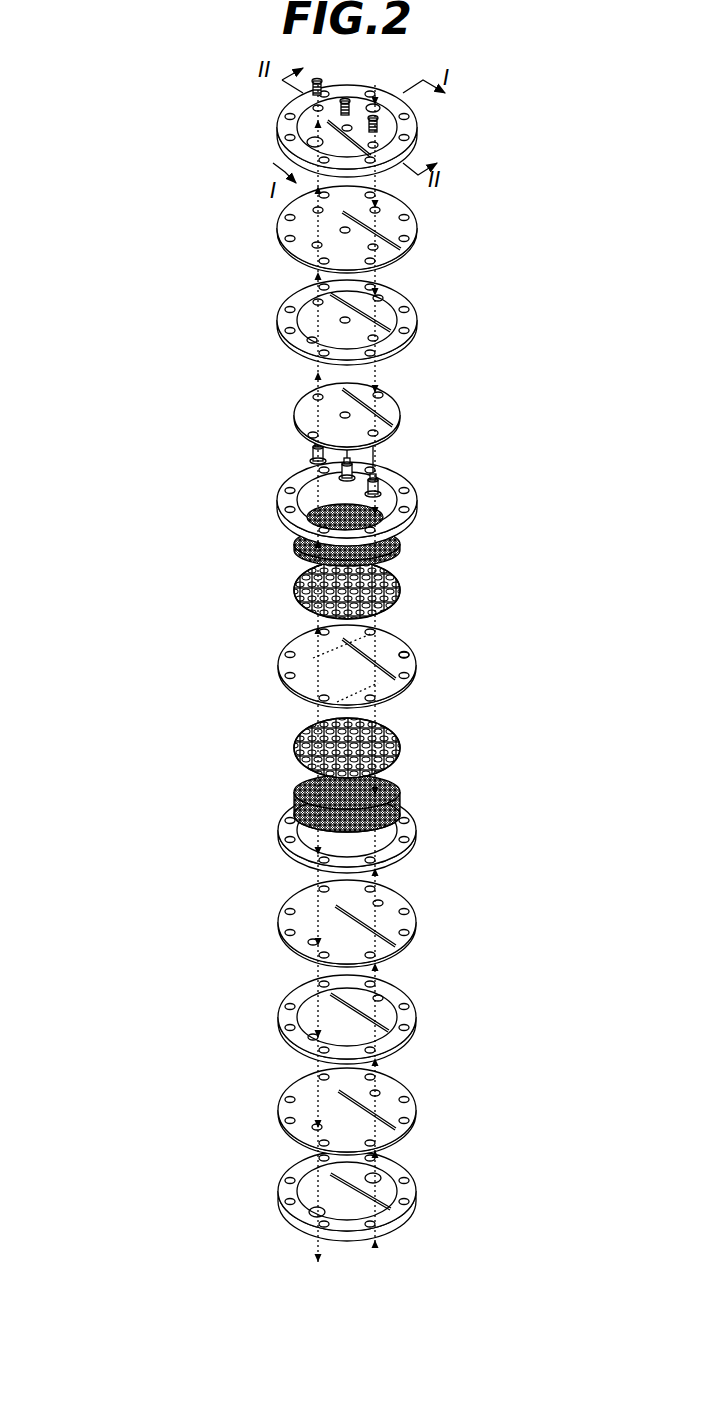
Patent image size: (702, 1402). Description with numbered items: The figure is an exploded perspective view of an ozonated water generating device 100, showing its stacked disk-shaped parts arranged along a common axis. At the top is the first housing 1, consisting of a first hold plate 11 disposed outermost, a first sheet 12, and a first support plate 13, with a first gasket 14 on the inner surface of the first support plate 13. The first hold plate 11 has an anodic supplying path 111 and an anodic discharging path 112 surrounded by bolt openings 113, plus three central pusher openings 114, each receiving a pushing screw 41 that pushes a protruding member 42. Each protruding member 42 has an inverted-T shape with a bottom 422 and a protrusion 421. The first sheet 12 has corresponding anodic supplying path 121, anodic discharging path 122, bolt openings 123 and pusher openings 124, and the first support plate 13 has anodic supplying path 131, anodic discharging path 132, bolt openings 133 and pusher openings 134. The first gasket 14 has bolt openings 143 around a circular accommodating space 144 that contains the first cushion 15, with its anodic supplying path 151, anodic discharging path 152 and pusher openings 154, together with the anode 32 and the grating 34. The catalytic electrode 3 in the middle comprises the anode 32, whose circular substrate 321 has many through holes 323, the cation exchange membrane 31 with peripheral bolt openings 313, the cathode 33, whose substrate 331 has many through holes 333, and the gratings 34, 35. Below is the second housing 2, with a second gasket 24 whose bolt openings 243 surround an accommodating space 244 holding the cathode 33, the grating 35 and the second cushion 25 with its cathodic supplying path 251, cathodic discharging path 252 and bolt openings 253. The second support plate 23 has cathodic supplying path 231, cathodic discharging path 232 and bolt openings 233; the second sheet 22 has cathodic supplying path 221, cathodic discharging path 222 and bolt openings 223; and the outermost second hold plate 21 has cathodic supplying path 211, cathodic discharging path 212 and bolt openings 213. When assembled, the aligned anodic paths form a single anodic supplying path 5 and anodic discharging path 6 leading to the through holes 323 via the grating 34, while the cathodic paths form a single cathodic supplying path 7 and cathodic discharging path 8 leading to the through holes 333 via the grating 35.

The ozonated water generating device 100 is at (105, 133).
The first housing 1 is at (182, 88).
The second housing 2 is at (182, 970).
The catalytic electrode 3 is at (182, 515).
The first hold plate 11 is at (268, 138).
The first sheet 12 is at (268, 212).
The first support plate 13 is at (268, 318).
The first gasket 14 is at (275, 497).
The first cushion 15 is at (275, 405).
The pushing screw 41 is at (370, 120).
The protruding member 42 is at (148, 418).
The protrusion 421 is at (310, 450).
The bottom 422 is at (308, 462).
The anodic supplying path 111 is at (454, 130).
The anodic discharging path 112 is at (431, 158).
The bolt openings 113 is at (410, 113).
The pusher openings 114 is at (312, 106).
The anodic supplying path 121 is at (383, 217).
The anodic discharging path 122 is at (322, 246).
The bolt openings 123 is at (403, 212).
The pusher openings 124 is at (314, 211).
The anodic supplying path 131 is at (381, 296).
The anodic discharging path 132 is at (309, 340).
The bolt openings 133 is at (403, 307).
The pusher openings 134 is at (315, 300).
The bolt openings 143 is at (403, 517).
The accommodating space 144 is at (395, 502).
The anodic supplying path 151 is at (381, 393).
The anodic discharging path 152 is at (310, 434).
The pusher openings 154 is at (315, 396).
The second hold plate 21 is at (268, 1205).
The cathodic supplying path 211 is at (426, 1200).
The cathodic discharging path 212 is at (415, 1232).
The bolt openings 213 is at (403, 1182).
The second sheet 22 is at (268, 1105).
The cathodic supplying path 221 is at (383, 1095).
The cathodic discharging path 222 is at (325, 1127).
The bolt openings 223 is at (403, 1098).
The second support plate 23 is at (268, 1016).
The cathodic supplying path 231 is at (381, 996).
The cathodic discharging path 232 is at (310, 1038).
The bolt openings 233 is at (403, 1003).
The second gasket 24 is at (268, 832).
The bolt openings 243 is at (408, 848).
The accommodating space 244 is at (395, 832).
The second cushion 25 is at (268, 918).
The cathodic supplying path 251 is at (381, 900).
The cathodic discharging path 252 is at (310, 943).
The bolt openings 253 is at (403, 908).
The cation exchange membrane 31 is at (268, 666).
The bolt openings 313 is at (405, 654).
The anode 32 is at (268, 582).
The substrate 321 is at (402, 596).
The through holes 323 is at (400, 580).
The cathode 33 is at (268, 745).
The substrate 331 is at (402, 756).
The through holes 333 is at (400, 745).
The grating 34 is at (272, 543).
The grating 35 is at (288, 793).
The anodic supplying path 5 is at (385, 113).
The anodic discharging path 6 is at (383, 150).
The cathodic supplying path 7 is at (387, 1180).
The cathodic discharging path 8 is at (327, 1213).